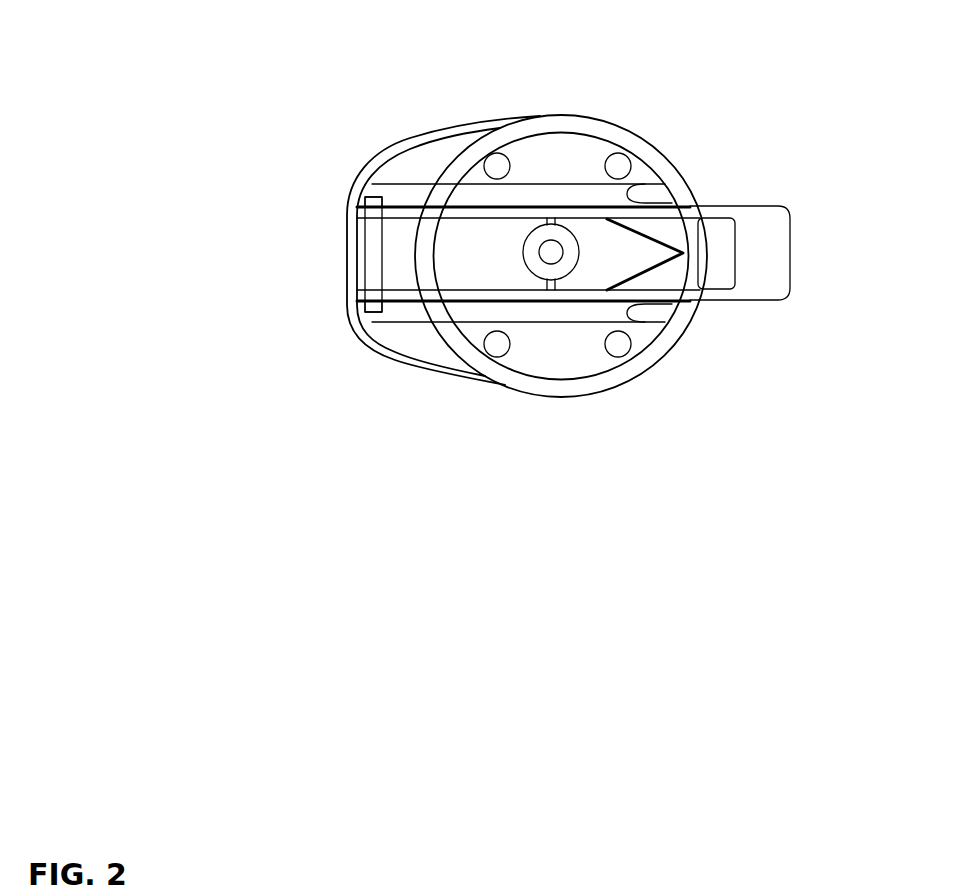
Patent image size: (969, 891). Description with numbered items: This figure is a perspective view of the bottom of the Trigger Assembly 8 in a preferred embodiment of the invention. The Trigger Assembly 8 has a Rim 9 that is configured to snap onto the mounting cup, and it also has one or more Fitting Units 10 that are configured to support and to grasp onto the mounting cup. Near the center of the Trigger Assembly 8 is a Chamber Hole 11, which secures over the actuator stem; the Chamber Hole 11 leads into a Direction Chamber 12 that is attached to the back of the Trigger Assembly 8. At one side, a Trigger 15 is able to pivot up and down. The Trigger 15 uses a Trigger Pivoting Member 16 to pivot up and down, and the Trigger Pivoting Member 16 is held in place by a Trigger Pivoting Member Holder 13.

The Trigger Assembly 8 is at (470, 387).
The Rim 9 is at (652, 356).
The Fitting Units 10 is at (613, 166).
The Chamber Hole 11 is at (551, 252).
The Direction Chamber 12 is at (567, 223).
The Trigger Pivoting Member Holder 13 is at (375, 253).
The Trigger 15 is at (785, 296).
The Trigger Pivoting Member 16 is at (378, 293).